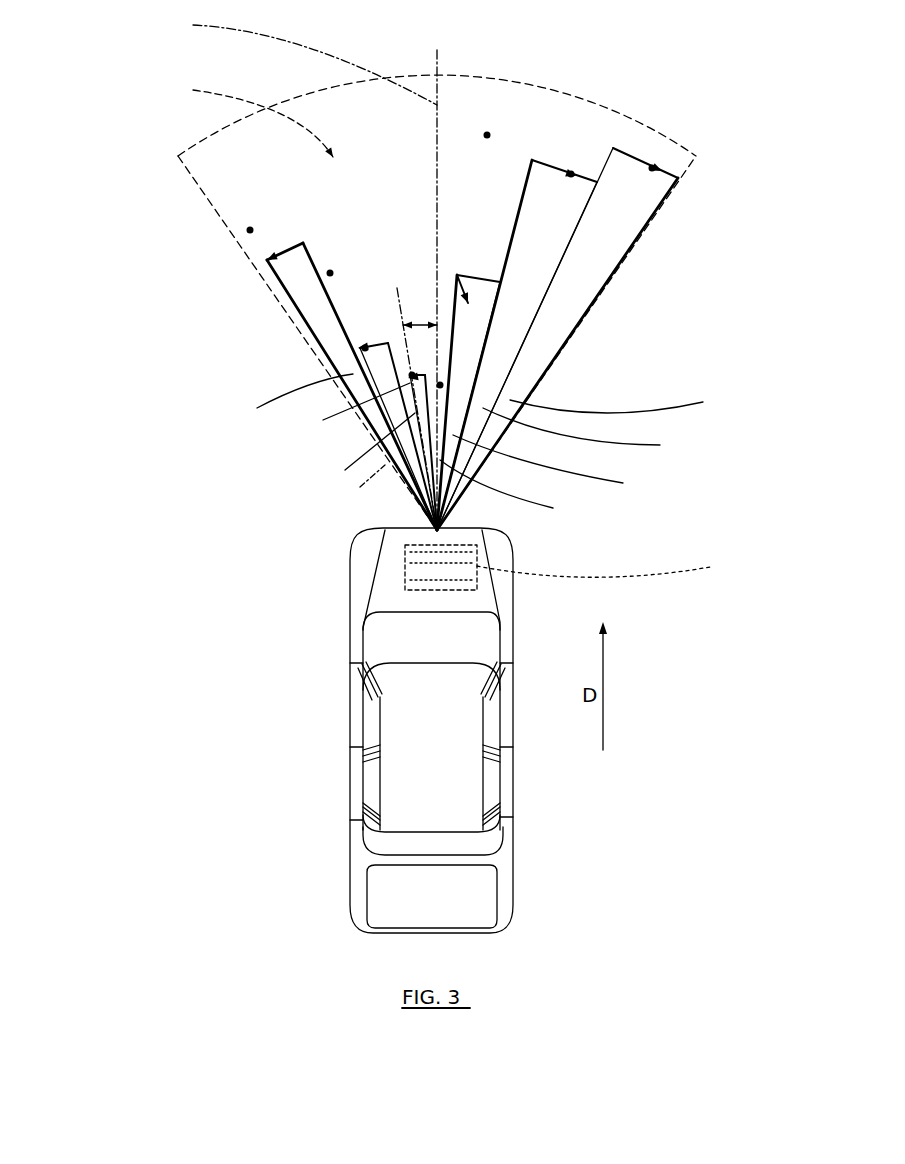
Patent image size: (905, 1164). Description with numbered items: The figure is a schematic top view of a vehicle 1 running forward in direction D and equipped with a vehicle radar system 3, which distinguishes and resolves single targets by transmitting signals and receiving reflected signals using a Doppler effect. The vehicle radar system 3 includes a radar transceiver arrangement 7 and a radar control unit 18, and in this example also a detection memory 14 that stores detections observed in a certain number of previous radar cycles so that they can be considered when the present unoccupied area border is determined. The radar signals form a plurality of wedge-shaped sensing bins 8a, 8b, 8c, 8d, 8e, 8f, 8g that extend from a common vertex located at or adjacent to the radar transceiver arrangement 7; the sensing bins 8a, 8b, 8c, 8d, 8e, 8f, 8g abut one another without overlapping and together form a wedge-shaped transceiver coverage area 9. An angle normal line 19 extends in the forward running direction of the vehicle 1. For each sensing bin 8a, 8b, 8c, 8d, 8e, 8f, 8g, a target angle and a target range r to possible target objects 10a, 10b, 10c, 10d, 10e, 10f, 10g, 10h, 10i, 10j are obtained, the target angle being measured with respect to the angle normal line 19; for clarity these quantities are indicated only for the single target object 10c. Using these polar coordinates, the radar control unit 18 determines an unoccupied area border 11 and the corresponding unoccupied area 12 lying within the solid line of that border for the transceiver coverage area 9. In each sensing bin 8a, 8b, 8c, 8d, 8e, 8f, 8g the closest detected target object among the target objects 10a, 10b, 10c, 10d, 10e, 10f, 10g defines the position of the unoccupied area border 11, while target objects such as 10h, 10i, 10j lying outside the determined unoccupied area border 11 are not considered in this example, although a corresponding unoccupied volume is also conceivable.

The vehicle 1 is at (437, 728).
The vehicle radar system 3 is at (405, 552).
The radar transceiver arrangement 7 is at (405, 565).
The radar control unit 18 is at (405, 585).
The detection memory 14 is at (605, 570).
The transceiver coverage area 9 is at (249, 118).
The unoccupied area border 11 is at (535, 158).
The unoccupied area 12 is at (470, 305).
The angle normal line 19 is at (298, 59).
The target object 10a is at (330, 273).
The target object 10b is at (397, 375).
The target object 10c is at (357, 372).
The target object 10d is at (443, 385).
The target object 10e is at (470, 282).
The target object 10f is at (573, 175).
The target object 10g is at (653, 168).
The target object 10h is at (250, 230).
The target object 10i is at (417, 322).
The target object 10j is at (490, 134).
The sensing bin 8a is at (294, 406).
The sensing bin 8b is at (353, 413).
The sensing bin 8c is at (368, 445).
The sensing bin 8d is at (511, 490).
The sensing bin 8e is at (554, 465).
The sensing bin 8f is at (586, 431).
The sensing bin 8g is at (623, 400).
The target range r is at (364, 486).